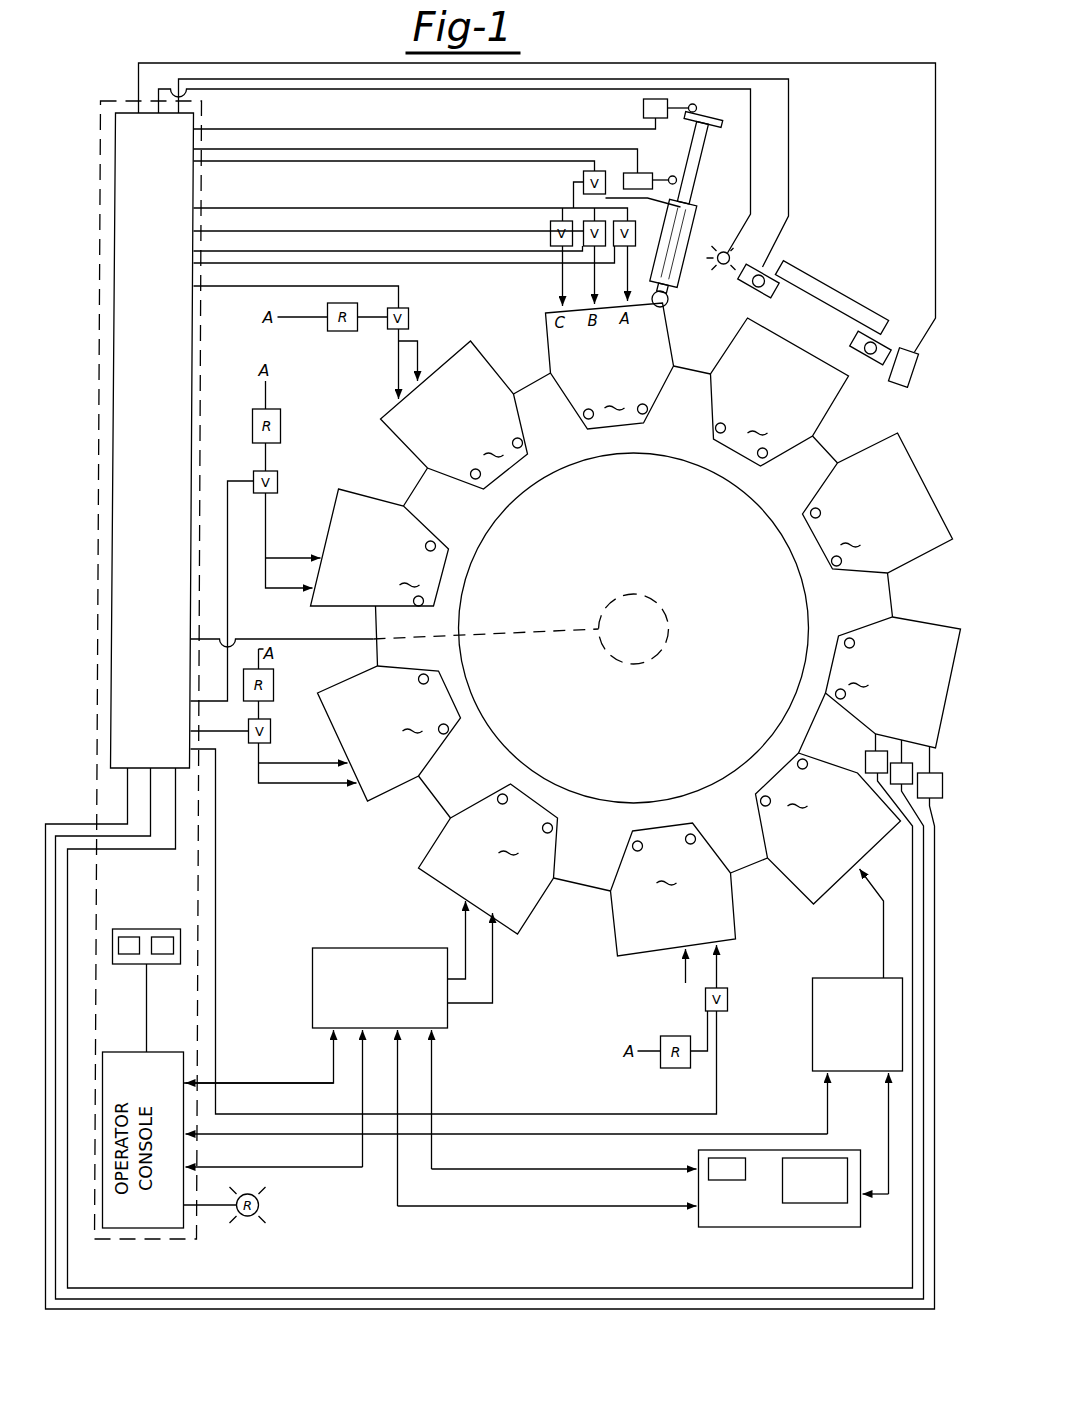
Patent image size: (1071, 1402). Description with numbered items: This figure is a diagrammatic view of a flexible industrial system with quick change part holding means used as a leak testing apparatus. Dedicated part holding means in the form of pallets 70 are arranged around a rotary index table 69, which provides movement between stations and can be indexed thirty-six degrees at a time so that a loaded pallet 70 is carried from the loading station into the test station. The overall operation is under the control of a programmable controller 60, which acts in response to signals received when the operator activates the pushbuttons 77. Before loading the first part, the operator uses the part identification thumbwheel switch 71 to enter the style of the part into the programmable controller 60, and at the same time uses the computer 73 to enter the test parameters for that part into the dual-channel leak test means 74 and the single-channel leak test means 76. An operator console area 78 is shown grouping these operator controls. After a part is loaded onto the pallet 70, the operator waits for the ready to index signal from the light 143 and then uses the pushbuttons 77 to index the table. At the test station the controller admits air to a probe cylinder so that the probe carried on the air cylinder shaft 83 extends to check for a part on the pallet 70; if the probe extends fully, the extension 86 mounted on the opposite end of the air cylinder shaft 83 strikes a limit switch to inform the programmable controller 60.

The programmable controller 60 is at (203, 358).
The pallet 70 is at (636, 629).
The rotary index table 69 is at (663, 707).
The air cylinder shaft 83 is at (669, 298).
The extension 86 is at (697, 128).
The light 143 is at (725, 243).
The pushbuttons 77 is at (857, 333).
The part identification thumbwheel switch 71 is at (170, 906).
The operator station 78 is at (196, 1033).
The dual-channel leak test means 74 is at (383, 947).
The single-channel leak test means 76 is at (845, 960).
The computer 73 is at (738, 1226).